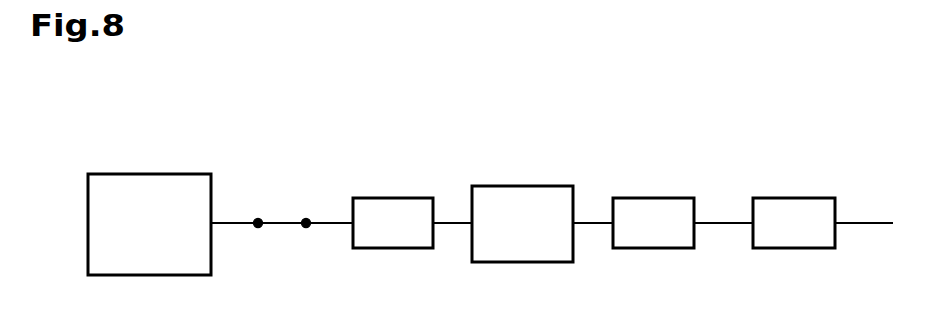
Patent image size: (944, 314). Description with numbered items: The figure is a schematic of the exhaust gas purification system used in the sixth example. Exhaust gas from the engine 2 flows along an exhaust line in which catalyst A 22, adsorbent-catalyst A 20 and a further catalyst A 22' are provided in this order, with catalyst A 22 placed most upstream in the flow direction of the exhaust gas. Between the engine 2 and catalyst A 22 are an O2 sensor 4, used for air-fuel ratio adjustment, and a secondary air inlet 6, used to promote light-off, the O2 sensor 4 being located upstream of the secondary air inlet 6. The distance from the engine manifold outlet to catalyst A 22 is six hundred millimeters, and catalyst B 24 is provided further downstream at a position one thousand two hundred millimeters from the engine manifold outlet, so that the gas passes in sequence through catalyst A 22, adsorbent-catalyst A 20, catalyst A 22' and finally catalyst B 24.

The engine 2 is at (148, 175).
The O2 sensor 4 is at (257, 218).
The secondary air inlet 6 is at (305, 218).
The catalyst A 22 is at (393, 187).
The adsorbent-catalyst A 20 is at (520, 186).
The catalyst A 22' is at (653, 184).
The catalyst B 24 is at (795, 198).